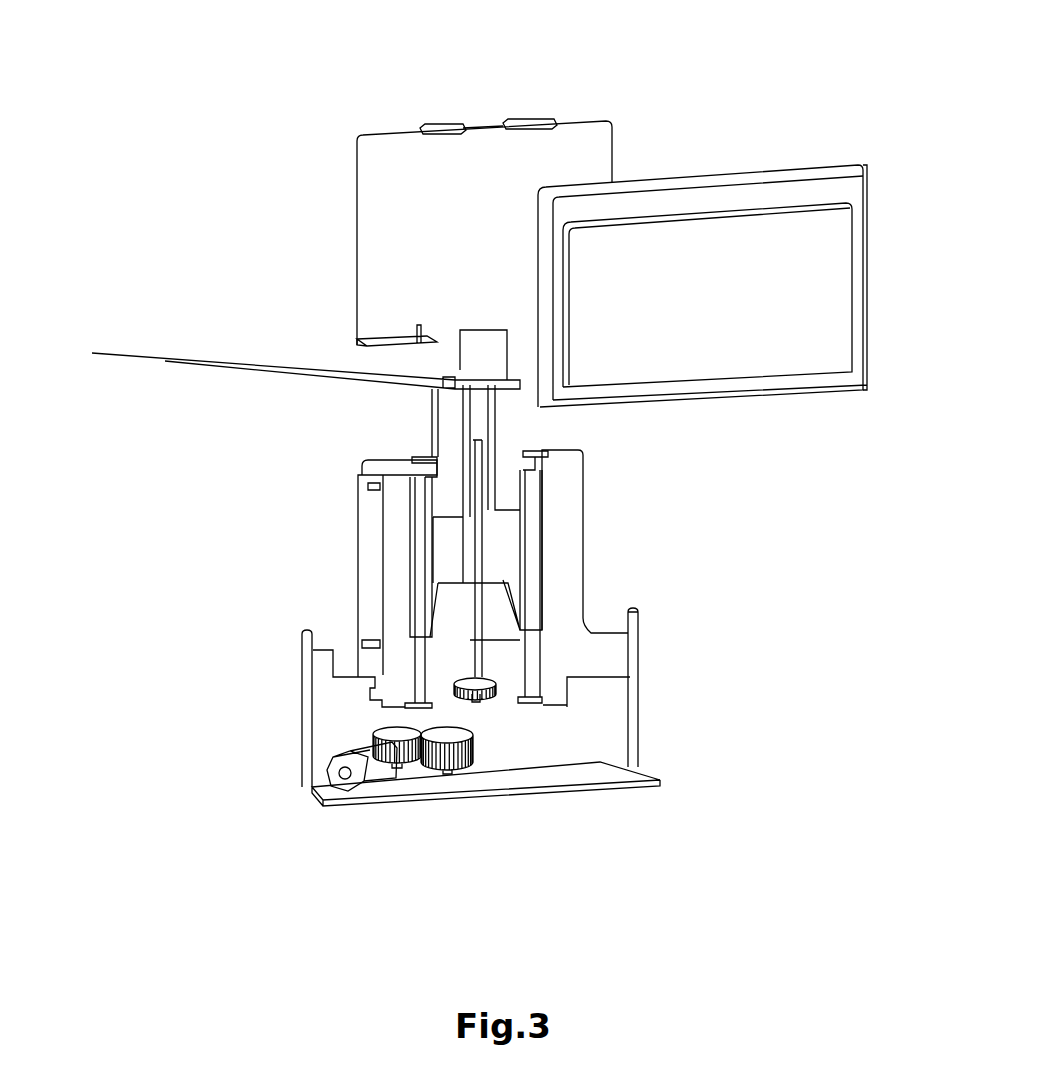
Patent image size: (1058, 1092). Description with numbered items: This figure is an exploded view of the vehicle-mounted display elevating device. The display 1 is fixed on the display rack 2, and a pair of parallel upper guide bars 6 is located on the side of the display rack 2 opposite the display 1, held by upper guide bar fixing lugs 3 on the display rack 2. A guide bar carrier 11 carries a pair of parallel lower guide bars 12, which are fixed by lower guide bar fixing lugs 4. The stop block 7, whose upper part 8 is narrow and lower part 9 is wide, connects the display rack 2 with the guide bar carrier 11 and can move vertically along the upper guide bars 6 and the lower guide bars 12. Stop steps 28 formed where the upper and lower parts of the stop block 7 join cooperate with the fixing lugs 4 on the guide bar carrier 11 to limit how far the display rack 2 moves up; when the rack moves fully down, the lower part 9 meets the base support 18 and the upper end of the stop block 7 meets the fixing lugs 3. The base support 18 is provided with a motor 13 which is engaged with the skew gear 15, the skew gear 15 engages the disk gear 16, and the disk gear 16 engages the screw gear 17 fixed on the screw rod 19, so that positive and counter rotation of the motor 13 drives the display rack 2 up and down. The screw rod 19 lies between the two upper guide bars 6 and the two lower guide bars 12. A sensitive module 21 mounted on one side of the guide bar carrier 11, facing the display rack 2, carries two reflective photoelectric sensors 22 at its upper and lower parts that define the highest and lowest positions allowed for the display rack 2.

The display 1 is at (853, 217).
The display rack 2 is at (573, 150).
The upper guide bar fixing lug 3 is at (510, 120).
The lower guide bar fixing lug 4 is at (527, 455).
The upper guide bar 6 is at (507, 370).
The stop block 7 is at (533, 502).
The upper part of the stop block 8 is at (296, 364).
The lower part of the stop block 9 is at (533, 617).
The guide bar carrier 11 is at (640, 663).
The lower guide bar 12 is at (533, 658).
The motor 13 is at (345, 773).
The skew gear 15 is at (397, 767).
The disk gear 16 is at (450, 767).
The screw gear 17 is at (477, 695).
The base support 18 is at (580, 660).
The screw rod 19 is at (477, 600).
The sensitive module 21 is at (343, 667).
The reflective photoelectric sensor 22 is at (360, 643).
The stop step 28 is at (365, 472).